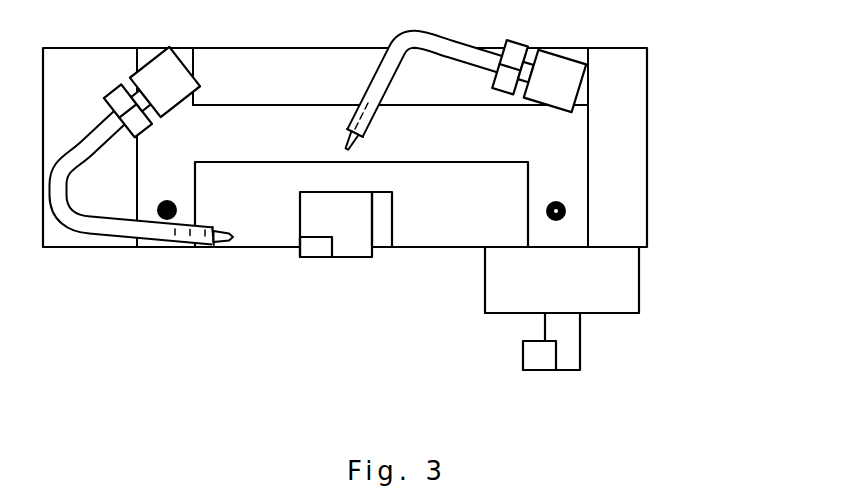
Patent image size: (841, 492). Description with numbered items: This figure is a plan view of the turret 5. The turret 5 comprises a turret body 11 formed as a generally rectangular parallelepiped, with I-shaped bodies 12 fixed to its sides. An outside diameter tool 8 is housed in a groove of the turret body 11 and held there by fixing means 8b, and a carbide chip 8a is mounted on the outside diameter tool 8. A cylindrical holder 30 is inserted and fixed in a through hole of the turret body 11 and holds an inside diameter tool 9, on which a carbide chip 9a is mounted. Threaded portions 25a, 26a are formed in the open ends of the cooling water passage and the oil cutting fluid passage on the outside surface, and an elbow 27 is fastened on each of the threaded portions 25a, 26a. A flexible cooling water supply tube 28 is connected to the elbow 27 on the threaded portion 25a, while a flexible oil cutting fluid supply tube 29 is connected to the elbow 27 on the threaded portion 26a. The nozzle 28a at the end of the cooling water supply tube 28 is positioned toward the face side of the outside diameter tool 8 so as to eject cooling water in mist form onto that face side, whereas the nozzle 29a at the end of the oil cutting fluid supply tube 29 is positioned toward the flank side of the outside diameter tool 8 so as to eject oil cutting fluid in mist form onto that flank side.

The turret 5 is at (664, 131).
The turret body 11 is at (220, 76).
The I-shaped body 12 is at (300, 125).
The elbow 27 is at (158, 68).
The flexible cooling water supply tube 28 is at (98, 221).
The nozzle 28a is at (228, 234).
The flexible oil cutting fluid supply tube 29 is at (447, 40).
The nozzle 29a is at (352, 146).
The threaded portion 26a is at (177, 207).
The threaded portion 25a is at (551, 200).
The outside diameter tool 8 is at (352, 242).
The carbide chip 8a is at (315, 250).
The fixing means 8b is at (382, 211).
The inside diameter tool 9 is at (570, 332).
The carbide chip 9a is at (530, 358).
The cylindrical holder 30 is at (620, 277).